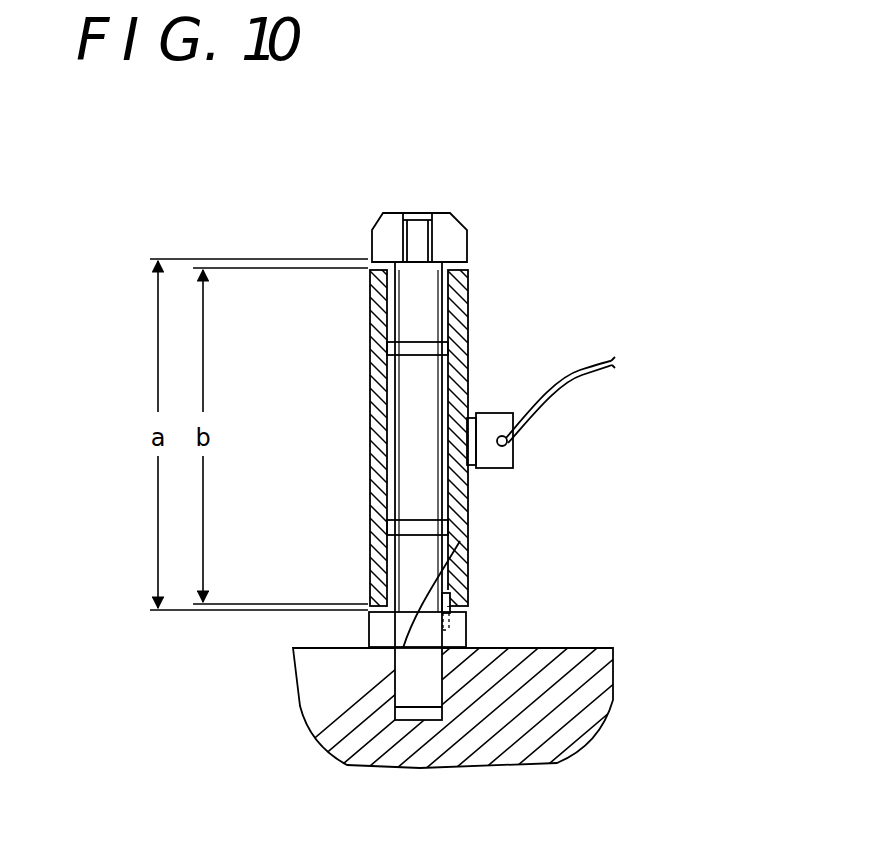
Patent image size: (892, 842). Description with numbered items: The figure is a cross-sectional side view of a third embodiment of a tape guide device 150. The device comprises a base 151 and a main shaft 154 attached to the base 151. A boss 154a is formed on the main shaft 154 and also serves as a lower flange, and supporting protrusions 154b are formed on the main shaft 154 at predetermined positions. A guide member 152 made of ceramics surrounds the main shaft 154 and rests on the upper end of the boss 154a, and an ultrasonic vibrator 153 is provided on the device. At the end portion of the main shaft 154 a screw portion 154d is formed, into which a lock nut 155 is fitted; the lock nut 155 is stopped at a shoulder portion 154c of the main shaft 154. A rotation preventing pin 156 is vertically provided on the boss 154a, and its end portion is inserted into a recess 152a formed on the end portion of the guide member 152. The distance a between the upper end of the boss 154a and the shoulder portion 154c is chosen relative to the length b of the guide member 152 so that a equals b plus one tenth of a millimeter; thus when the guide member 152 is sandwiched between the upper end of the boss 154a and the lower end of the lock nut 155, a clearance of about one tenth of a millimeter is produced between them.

The tape guide device 150 is at (306, 208).
The base 151 is at (557, 747).
The guide member 152 is at (372, 300).
The recess 152a is at (448, 592).
The ultrasonic vibrator 153 is at (501, 413).
The main shaft 154 is at (395, 478).
The boss 154a is at (368, 632).
The supporting protrusions 154b is at (395, 364).
The shoulder portion 154c is at (397, 258).
The screw portion 154d is at (419, 213).
The lock nut 155 is at (467, 232).
The rotation preventing pin 156 is at (458, 611).